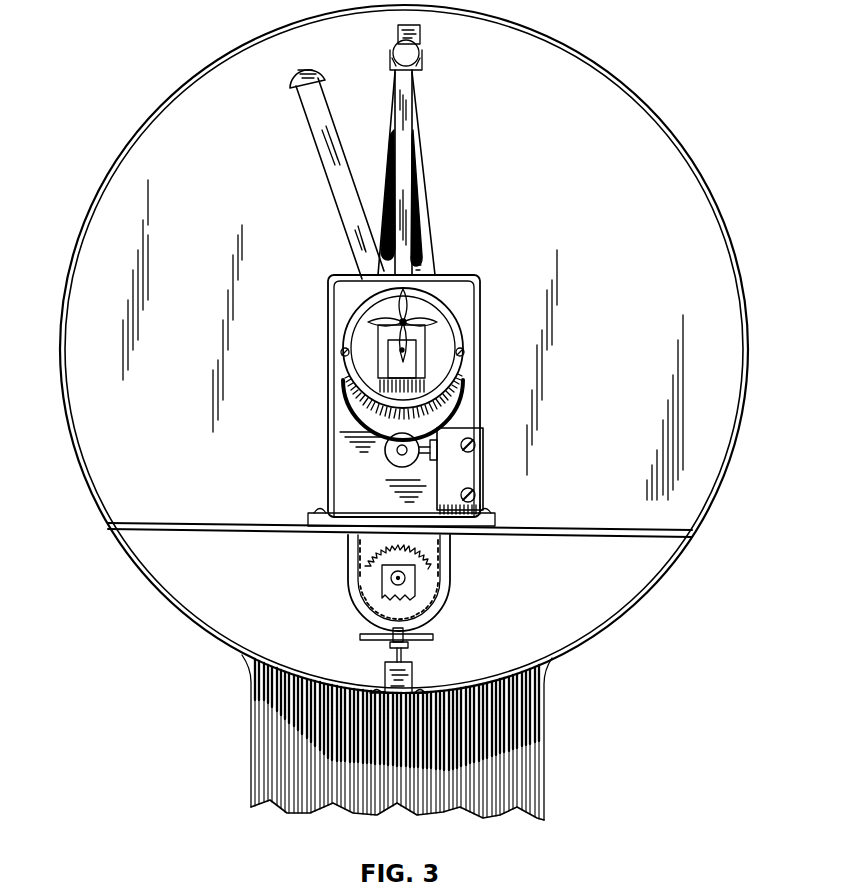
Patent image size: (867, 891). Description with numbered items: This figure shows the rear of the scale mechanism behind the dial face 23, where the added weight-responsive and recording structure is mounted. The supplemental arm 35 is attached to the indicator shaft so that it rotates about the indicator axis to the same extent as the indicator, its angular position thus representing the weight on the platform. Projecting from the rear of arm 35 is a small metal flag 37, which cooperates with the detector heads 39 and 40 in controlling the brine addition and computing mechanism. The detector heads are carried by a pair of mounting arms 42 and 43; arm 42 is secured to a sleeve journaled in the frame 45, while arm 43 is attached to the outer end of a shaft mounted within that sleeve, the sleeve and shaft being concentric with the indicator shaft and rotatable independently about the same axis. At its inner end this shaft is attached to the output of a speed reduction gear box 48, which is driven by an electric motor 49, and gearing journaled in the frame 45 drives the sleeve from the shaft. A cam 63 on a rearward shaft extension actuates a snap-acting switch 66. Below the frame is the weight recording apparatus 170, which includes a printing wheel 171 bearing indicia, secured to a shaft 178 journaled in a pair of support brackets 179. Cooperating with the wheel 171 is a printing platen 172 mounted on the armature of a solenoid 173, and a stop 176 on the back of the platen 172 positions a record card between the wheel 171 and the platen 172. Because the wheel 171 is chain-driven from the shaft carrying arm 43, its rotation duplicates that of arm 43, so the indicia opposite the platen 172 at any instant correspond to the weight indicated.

The dial face 23 is at (643, 244).
The supplemental arm 35 is at (428, 132).
The metal flag 37 is at (420, 29).
The detector head 39 is at (310, 58).
The detector head 40 is at (421, 58).
The arm 42 is at (310, 132).
The arm 43 is at (418, 106).
The frame 45 is at (466, 277).
The speed reduction gear box 48 is at (365, 334).
The electric motor 49 is at (378, 364).
The cam 63 is at (389, 457).
The snap-acting switch 66 is at (480, 430).
The weight recording apparatus 170 is at (452, 583).
The printing wheel 171 is at (445, 604).
The printing platen 172 is at (412, 645).
The solenoid 173 is at (413, 671).
The stop 176 is at (386, 646).
The shaft 178 is at (392, 576).
The support brackets 179 is at (390, 592).